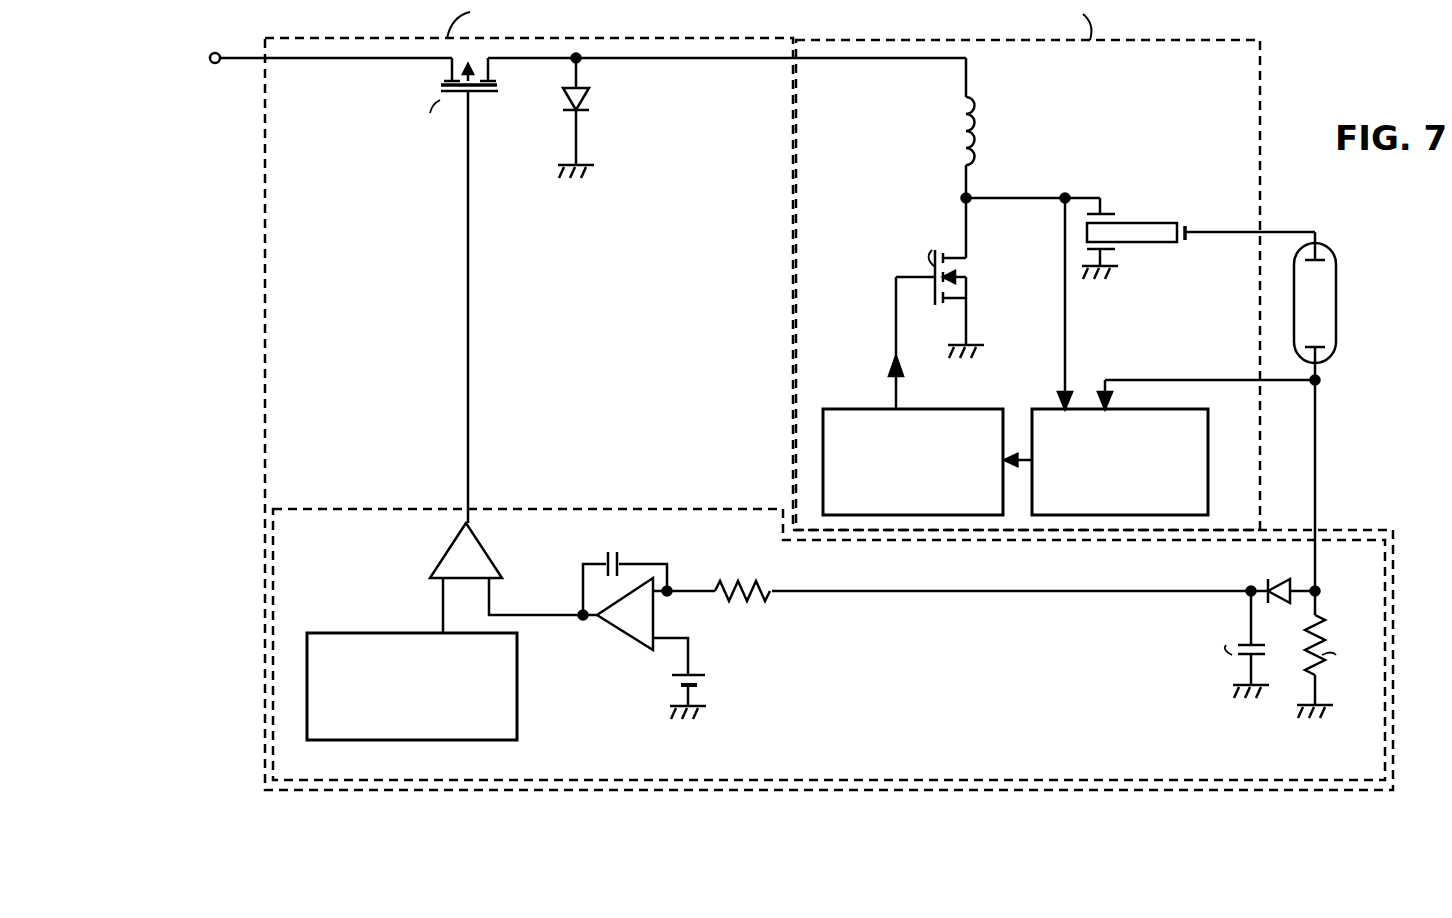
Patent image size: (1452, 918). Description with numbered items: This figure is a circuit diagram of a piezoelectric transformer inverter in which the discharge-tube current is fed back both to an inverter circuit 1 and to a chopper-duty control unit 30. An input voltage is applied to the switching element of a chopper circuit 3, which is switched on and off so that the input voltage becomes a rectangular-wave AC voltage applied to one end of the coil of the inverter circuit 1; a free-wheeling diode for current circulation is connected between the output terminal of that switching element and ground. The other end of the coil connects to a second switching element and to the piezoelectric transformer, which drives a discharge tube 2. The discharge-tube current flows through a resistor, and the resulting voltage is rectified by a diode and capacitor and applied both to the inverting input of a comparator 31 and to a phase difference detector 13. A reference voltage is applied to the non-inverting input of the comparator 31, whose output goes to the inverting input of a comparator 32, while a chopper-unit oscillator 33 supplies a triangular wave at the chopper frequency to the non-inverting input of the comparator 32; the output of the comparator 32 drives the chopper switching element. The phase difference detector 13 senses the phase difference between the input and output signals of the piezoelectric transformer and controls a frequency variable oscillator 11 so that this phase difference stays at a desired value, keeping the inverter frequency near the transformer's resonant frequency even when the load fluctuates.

The inverter circuit 1 is at (1200, 40).
The discharge tube 2 is at (1337, 298).
The chopper circuit 3 is at (756, 38).
The frequency variable oscillator 11 is at (842, 409).
The phase difference detector 13 is at (1208, 470).
The chopper-duty control unit 30 is at (752, 509).
The comparator 31 is at (628, 636).
The comparator 32 is at (440, 545).
The chopper-unit oscillator 33 is at (517, 708).